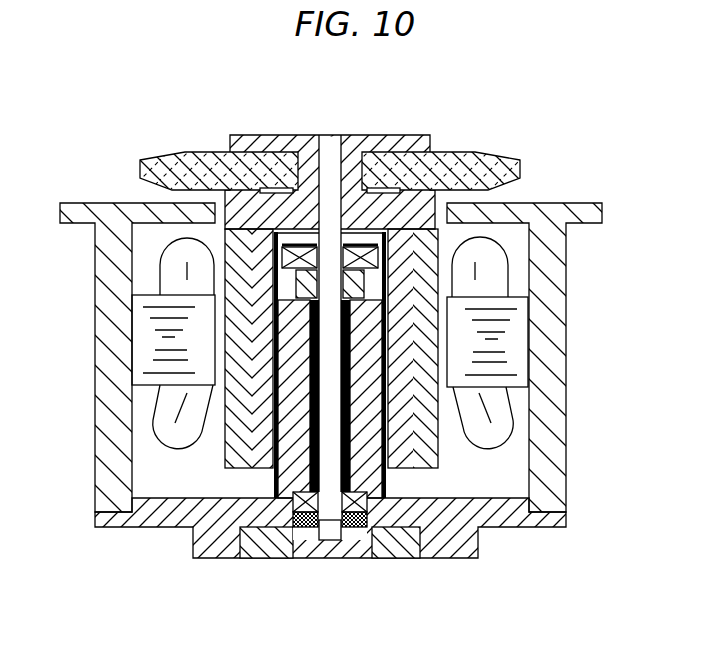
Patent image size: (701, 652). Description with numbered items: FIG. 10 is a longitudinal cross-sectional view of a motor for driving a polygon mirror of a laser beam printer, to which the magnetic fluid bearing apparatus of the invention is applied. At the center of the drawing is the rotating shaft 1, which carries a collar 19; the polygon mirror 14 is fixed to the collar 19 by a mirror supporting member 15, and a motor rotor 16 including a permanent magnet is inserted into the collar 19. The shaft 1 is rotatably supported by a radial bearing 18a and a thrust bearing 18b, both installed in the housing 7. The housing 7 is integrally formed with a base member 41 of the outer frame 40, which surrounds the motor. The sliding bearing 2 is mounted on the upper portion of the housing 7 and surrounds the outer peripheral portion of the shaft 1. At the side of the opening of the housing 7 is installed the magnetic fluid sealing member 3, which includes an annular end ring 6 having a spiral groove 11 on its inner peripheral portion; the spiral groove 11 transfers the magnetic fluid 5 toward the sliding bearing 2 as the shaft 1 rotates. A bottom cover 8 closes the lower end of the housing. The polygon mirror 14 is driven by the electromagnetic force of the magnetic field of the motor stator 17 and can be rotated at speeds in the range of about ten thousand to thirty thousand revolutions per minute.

The rotating shaft 1 is at (360, 134).
The sliding bearing 2 is at (395, 284).
The magnetic fluid sealing member 3 is at (314, 149).
The magnetic fluid 5 is at (300, 250).
The annular end ring 6 is at (374, 230).
The housing 7 is at (440, 452).
The bottom cover 8 is at (263, 558).
The spiral groove 11 is at (302, 228).
The polygon mirror 14 is at (170, 162).
The mirror supporting member 15 is at (243, 134).
The motor rotor 16 is at (227, 353).
The motor stator 17 is at (155, 368).
The radial bearing 18a is at (360, 504).
The thrust bearing 18b is at (323, 532).
The collar 19 is at (218, 452).
The outer frame 40 is at (567, 364).
The base member 41 is at (120, 528).